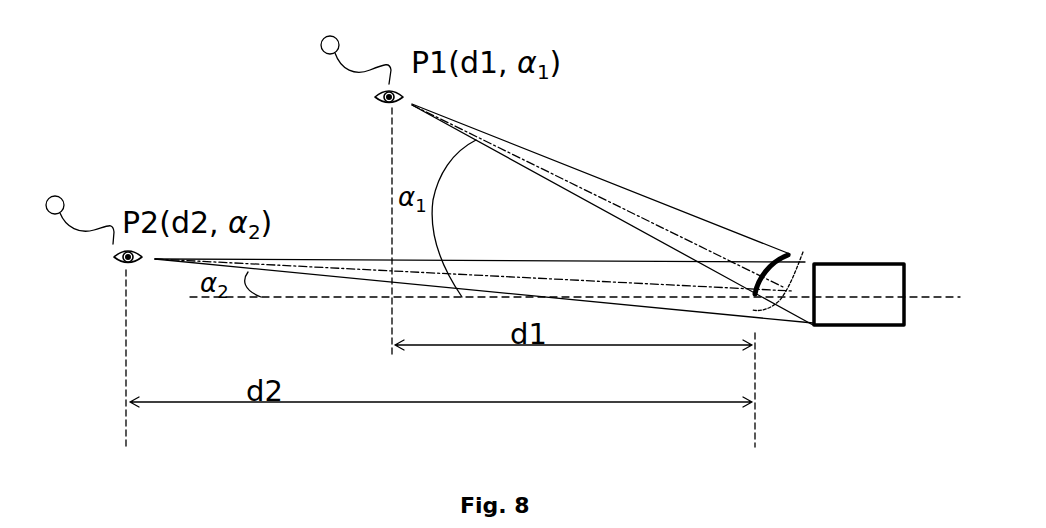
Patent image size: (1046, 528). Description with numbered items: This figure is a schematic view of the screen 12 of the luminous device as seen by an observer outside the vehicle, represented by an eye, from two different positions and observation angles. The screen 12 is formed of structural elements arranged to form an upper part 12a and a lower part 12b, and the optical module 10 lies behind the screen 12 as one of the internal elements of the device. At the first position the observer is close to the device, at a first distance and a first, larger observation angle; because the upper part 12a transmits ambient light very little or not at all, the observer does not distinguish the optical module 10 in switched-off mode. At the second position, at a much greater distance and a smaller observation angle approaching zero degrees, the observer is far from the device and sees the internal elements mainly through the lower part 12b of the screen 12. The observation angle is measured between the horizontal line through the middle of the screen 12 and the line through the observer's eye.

The optical module 10 is at (859, 294).
The screen 12 is at (708, 139).
The upper part 12a is at (726, 272).
The lower part 12b is at (803, 252).